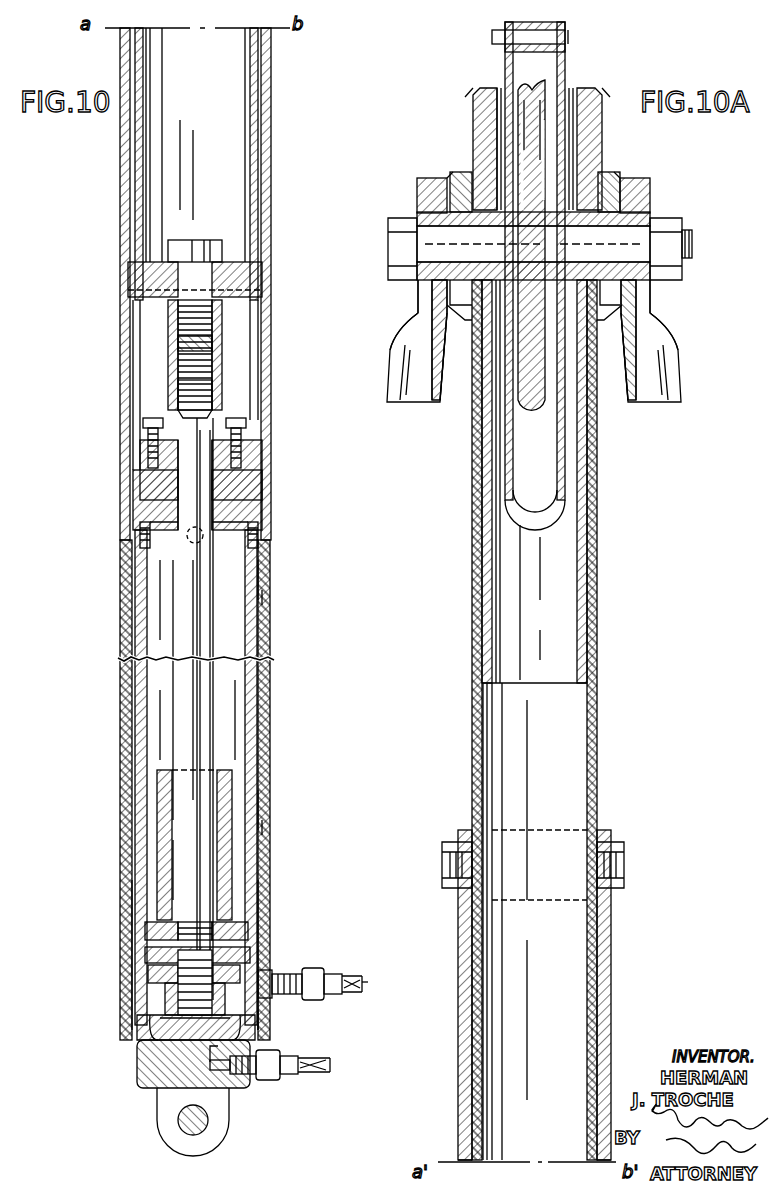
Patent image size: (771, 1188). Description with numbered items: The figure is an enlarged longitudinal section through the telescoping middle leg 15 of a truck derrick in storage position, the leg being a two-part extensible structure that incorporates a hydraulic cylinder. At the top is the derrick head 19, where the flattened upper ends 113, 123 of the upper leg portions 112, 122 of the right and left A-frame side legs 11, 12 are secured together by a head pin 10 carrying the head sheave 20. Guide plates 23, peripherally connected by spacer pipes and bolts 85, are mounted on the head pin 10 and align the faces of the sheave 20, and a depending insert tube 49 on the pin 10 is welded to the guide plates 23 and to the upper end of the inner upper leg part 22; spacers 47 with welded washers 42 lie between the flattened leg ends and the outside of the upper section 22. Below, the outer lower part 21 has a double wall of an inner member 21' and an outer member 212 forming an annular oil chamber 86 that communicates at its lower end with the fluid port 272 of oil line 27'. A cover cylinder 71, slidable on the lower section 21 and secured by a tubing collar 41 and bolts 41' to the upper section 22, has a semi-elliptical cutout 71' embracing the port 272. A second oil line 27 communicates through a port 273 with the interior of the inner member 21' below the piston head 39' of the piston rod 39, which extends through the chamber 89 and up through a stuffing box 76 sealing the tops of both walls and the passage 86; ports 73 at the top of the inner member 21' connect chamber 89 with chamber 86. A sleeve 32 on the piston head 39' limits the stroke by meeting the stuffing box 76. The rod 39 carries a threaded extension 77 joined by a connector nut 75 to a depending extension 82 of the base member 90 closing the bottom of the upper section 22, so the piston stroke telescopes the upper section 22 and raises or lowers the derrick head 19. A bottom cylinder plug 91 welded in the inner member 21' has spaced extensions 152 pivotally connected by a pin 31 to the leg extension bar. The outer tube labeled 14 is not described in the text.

In FIG. 10A, the head pin 10 is at (692, 242).
In FIG. 10A, the right A-frame side leg 11 is at (682, 357).
In FIG. 10A, the upper leg portion of side leg 11 112 is at (665, 393).
In FIG. 10A, the flattened upper end of side leg 11 113 is at (652, 300).
In FIG. 10A, the left A-frame side leg 12 is at (402, 390).
In FIG. 10A, the upper leg portion of side leg 12 122 is at (392, 355).
In FIG. 10A, the flattened upper end of side leg 12 123 is at (418, 298).
In FIG. 10, the outer tube 14 is at (118, 229).
In FIG. 10, the middle leg 15 is at (118, 814).
In FIG. 10A, the middle leg 15 is at (598, 632).
In FIG. 10, the spaced extensions of bottom plug 152 is at (226, 1118).
In FIG. 10A, the derrick head 19 is at (412, 186).
In FIG. 10A, the head sheave 20 is at (556, 80).
In FIG. 10, the outer lower part of middle leg 21 is at (154, 955).
In FIG. 10, the inner member 21' is at (230, 777).
In FIG. 10, the outer member 212 is at (262, 582).
In FIG. 10, the inner upper part of middle leg 22 is at (258, 101).
In FIG. 10A, the inner upper part of middle leg 22 is at (598, 719).
In FIG. 10A, the guide plates 23 is at (505, 108).
In FIG. 10, the oil line 27 is at (300, 1064).
In FIG. 10, the oil line 27' is at (380, 966).
In FIG. 10, the fluid port 272 is at (262, 986).
In FIG. 10, the port 273 is at (258, 1082).
In FIG. 10, the pin 31 is at (176, 1128).
In FIG. 10, the sleeve 32 is at (228, 782).
In FIG. 10, the piston rod 39 is at (236, 709).
In FIG. 10, the piston head 39' is at (162, 941).
In FIG. 10A, the tubing collar 41 is at (560, 982).
In FIG. 10A, the bolts 41' is at (532, 865).
In FIG. 10A, the washers 42 is at (425, 178).
In FIG. 10A, the spacers 47 is at (462, 174).
In FIG. 10A, the insert tube 49 is at (484, 480).
In FIG. 10, the cover cylinder 71 is at (224, 457).
In FIG. 10A, the cover cylinder 71 is at (564, 1058).
In FIG. 10, the semi-elliptical cutout 71' is at (246, 958).
In FIG. 10, the ports 73 is at (140, 543).
In FIG. 10, the connector nut 75 is at (222, 347).
In FIG. 10, the stuffing box 76 is at (158, 483).
In FIG. 10, the threaded extension 77 is at (205, 385).
In FIG. 10, the depending extension 82 is at (205, 328).
In FIG. 10A, the spacer pipes and bolts 85 is at (572, 42).
In FIG. 10, the annular oil chamber 86 is at (270, 597).
In FIG. 10, the chamber 89 is at (238, 699).
In FIG. 10, the base member 90 is at (240, 287).
In FIG. 10, the bottom cylinder plug 91 is at (146, 1074).